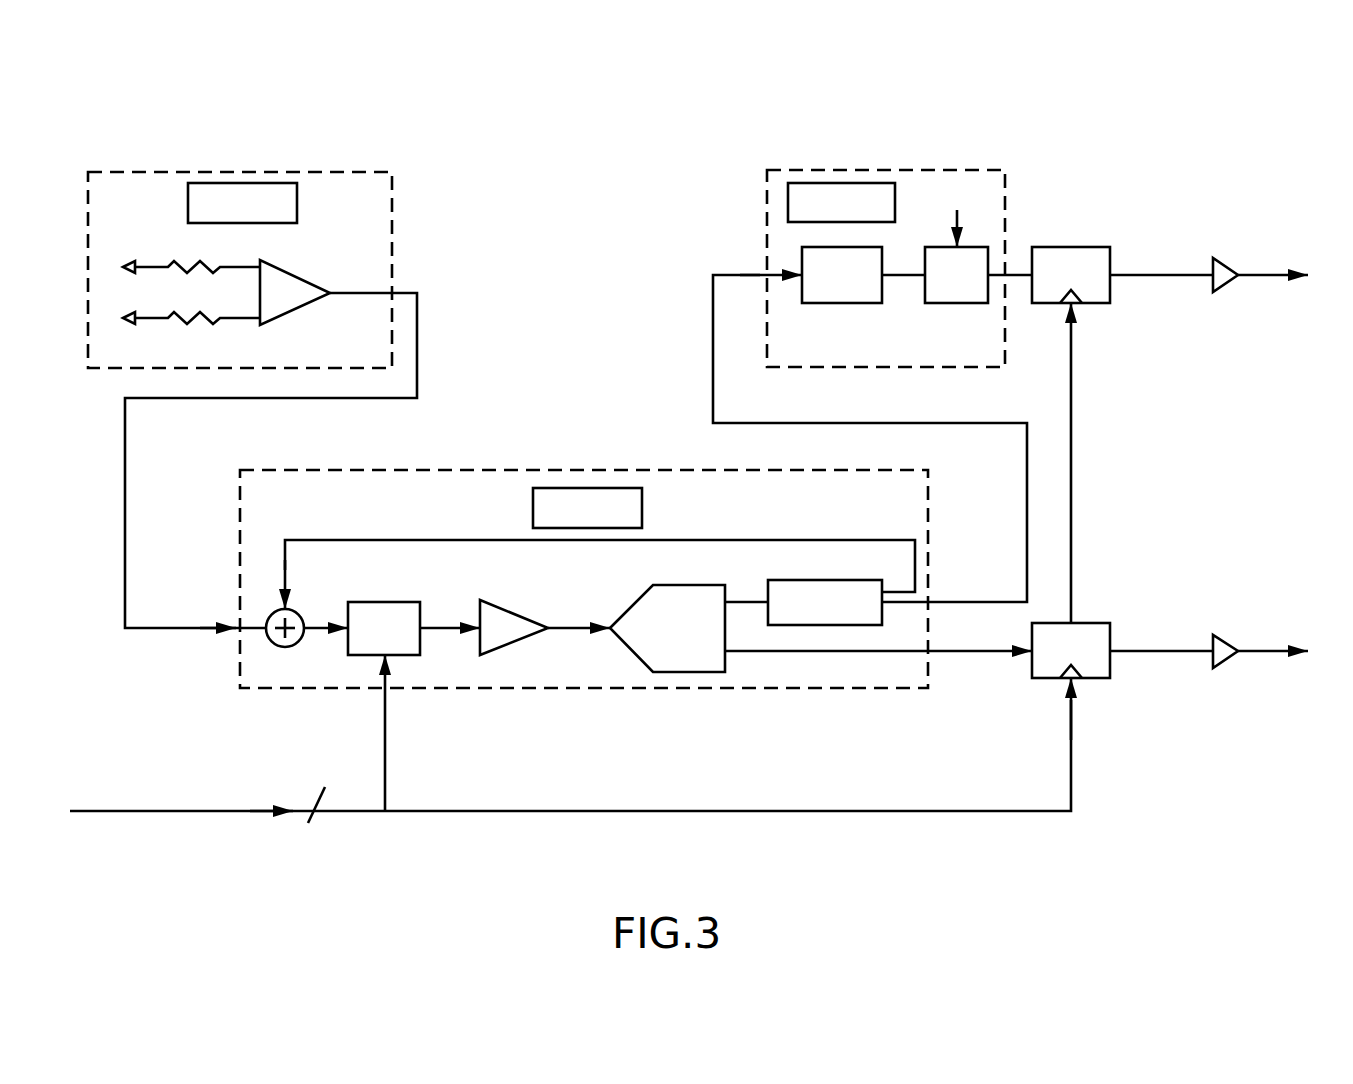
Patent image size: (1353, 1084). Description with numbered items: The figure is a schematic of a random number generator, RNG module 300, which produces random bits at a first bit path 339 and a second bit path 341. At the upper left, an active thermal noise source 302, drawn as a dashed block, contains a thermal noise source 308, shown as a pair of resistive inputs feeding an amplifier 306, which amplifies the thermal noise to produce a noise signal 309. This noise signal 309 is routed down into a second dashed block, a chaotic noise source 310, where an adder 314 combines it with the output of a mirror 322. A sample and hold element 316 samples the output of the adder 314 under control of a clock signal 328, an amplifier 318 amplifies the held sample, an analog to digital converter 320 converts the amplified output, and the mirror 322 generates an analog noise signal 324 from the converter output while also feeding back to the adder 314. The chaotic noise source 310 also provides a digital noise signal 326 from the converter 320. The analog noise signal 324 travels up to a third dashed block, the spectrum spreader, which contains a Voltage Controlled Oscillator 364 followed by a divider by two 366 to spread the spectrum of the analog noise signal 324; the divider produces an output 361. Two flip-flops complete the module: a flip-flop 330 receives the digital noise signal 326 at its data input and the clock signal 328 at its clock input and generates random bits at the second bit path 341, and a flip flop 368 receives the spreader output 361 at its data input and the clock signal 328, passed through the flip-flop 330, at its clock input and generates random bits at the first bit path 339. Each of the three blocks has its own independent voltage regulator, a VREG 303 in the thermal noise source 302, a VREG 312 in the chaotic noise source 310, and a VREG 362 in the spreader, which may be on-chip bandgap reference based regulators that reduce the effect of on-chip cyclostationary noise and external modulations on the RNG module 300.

The RNG module 300 is at (1240, 832).
The active thermal noise source 302 is at (285, 172).
The VREG 303 is at (297, 200).
The amplifier 306 is at (287, 273).
The thermal noise source 308 is at (200, 323).
The noise signal 309 is at (400, 292).
The chaotic noise source 310 is at (305, 690).
The VREG 312 is at (642, 510).
The adder 314 is at (300, 613).
The sample and hold element 316 is at (373, 602).
The amplifier 318 is at (515, 612).
The analog to digital converter 320 is at (688, 585).
The mirror 322 is at (807, 580).
The analog noise signal 324 is at (1027, 552).
The digital noise signal 326 is at (998, 655).
The clock signal 328 is at (598, 810).
The flip-flop 330 is at (1082, 622).
The first bit path 339 is at (1253, 270).
The second bit path 341 is at (1250, 648).
The output of spreader 361 is at (1013, 267).
The VREG 362 is at (835, 180).
The Voltage Controlled Oscillator 364 is at (838, 303).
The divider by two 366 is at (952, 303).
The flip flop 368 is at (1075, 245).